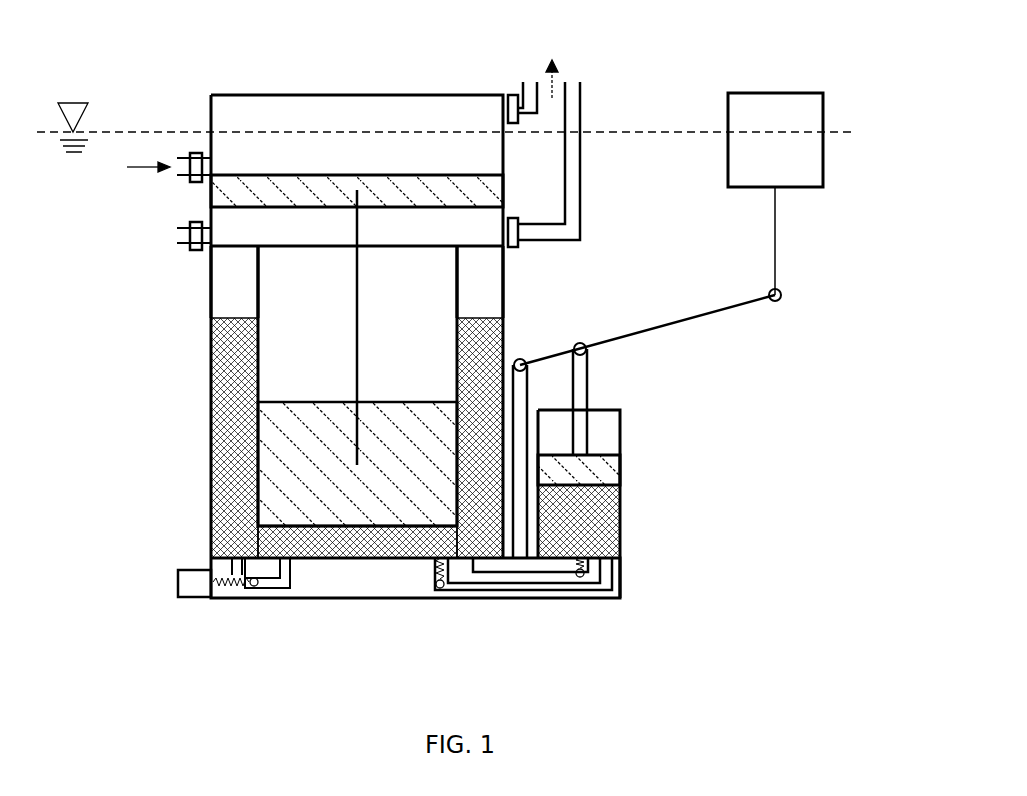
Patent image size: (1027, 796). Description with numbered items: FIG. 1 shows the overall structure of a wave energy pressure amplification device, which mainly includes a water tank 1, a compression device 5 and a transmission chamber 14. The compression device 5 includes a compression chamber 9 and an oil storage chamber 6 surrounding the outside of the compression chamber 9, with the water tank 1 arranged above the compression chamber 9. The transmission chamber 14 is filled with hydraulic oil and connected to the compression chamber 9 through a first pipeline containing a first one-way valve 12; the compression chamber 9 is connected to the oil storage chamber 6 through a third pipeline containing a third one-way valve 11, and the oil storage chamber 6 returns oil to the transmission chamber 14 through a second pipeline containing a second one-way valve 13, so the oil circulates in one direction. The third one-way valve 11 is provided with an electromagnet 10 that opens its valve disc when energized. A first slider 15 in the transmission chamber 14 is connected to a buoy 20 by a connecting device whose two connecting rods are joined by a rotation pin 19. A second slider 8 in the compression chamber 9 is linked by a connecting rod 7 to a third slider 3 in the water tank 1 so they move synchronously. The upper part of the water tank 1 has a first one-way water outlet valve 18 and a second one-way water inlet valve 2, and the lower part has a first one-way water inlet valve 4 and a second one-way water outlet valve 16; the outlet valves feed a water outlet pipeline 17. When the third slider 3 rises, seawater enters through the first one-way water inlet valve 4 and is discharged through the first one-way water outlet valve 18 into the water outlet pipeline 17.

The water tank 1 is at (211, 95).
The second one-way water inlet valve 2 is at (193, 150).
The third slider 3 is at (211, 192).
The first one-way water inlet valve 4 is at (196, 250).
The compression device 5 is at (211, 308).
The oil storage chamber 6 is at (222, 377).
The connecting rod 7 is at (357, 440).
The second slider 8 is at (352, 482).
The compression chamber 9 is at (257, 528).
The electromagnet 10 is at (197, 598).
The third one-way valve 11 is at (220, 598).
The first one-way valve 12 is at (442, 598).
The second one-way valve 13 is at (592, 598).
The transmission chamber 14 is at (620, 527).
The first slider 15 is at (608, 470).
The second one-way water outlet valve 16 is at (519, 248).
The water outlet pipeline 17 is at (582, 193).
The first one-way water outlet valve 18 is at (512, 125).
The rotation pin 19 is at (780, 300).
The buoy 20 is at (818, 188).